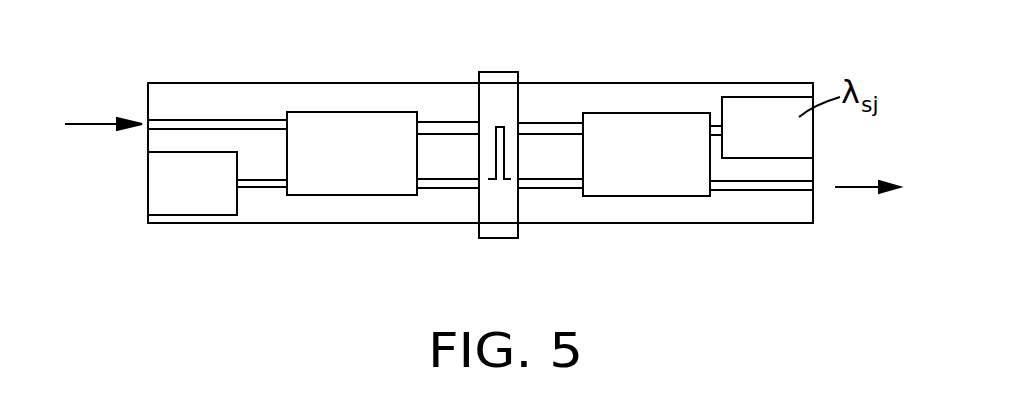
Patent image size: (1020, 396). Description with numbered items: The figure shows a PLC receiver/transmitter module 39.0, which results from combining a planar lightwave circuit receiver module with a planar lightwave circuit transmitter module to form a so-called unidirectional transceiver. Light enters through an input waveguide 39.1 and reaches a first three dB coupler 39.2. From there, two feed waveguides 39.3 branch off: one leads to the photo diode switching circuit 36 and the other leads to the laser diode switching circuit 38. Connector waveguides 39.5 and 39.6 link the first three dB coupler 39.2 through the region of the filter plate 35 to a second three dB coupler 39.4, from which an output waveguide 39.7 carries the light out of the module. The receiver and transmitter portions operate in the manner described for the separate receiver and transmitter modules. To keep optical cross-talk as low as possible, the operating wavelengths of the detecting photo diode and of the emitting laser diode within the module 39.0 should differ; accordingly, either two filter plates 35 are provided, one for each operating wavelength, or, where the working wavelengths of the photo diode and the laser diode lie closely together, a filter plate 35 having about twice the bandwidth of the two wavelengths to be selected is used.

The PLC receiver/transmitter module 39.0 is at (157, 98).
The input waveguide 39.1 is at (208, 119).
The first 3 dB coupler 39.2 is at (343, 112).
The feed waveguides 39.3 is at (717, 125).
The second 3 dB coupler 39.4 is at (638, 113).
The connector waveguide 39.5 is at (460, 135).
The connector waveguide 39.6 is at (557, 135).
The output waveguide 39.7 is at (772, 193).
The filter plate 35 is at (502, 85).
The photo diode switching circuit 36 is at (182, 210).
The laser diode switching circuit 38 is at (772, 105).